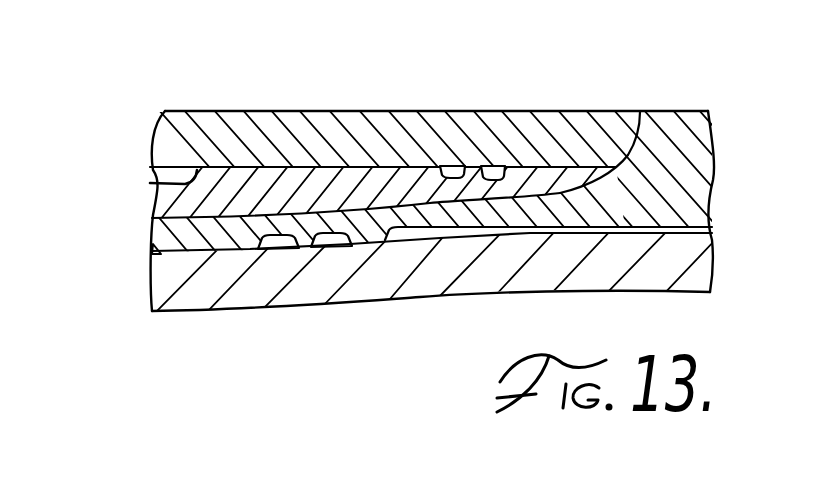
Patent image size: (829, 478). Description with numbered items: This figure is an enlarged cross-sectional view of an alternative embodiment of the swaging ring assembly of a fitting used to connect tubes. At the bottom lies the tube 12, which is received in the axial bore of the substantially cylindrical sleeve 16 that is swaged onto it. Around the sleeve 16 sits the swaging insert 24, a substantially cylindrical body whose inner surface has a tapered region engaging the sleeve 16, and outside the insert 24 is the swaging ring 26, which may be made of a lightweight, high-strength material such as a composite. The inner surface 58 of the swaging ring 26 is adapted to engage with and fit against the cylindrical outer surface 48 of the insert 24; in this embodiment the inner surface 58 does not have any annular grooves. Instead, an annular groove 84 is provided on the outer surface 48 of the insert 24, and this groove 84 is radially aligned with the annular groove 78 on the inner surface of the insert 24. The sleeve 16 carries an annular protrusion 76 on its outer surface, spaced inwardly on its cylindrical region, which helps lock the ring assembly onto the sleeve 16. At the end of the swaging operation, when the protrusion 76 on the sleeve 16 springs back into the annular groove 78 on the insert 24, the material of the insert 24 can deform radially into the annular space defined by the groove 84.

The tube 12 is at (232, 312).
The sleeve 16 is at (153, 232).
The swaging insert 24 is at (157, 202).
The swaging ring 26 is at (352, 113).
The outer surface 48 is at (253, 168).
The inner surface 58 is at (150, 183).
The second annular protrusion 76 is at (477, 195).
The annular groove 78 is at (463, 187).
The annular groove 84 is at (460, 172).